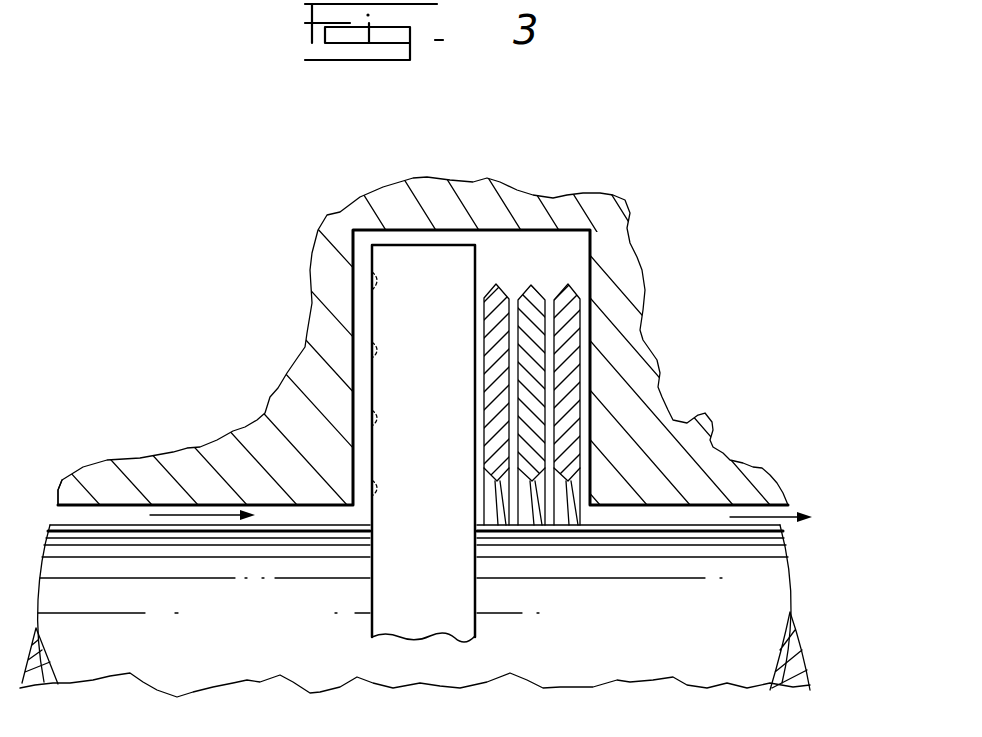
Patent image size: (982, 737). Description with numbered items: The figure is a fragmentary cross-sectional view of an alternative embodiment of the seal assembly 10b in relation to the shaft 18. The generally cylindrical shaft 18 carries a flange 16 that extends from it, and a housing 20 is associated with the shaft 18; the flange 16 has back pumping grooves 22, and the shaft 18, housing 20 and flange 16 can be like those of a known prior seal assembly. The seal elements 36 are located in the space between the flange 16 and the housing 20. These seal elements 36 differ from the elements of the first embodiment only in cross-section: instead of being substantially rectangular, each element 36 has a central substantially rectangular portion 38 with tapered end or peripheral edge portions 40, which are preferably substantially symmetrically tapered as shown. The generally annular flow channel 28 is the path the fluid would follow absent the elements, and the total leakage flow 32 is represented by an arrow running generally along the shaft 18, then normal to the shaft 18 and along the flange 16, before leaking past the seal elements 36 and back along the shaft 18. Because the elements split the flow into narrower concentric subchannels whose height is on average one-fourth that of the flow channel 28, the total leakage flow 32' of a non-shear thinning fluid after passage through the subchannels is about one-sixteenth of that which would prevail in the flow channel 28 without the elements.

The seal assembly 10b is at (530, 268).
The flange 16 is at (410, 222).
The shaft 18 is at (748, 595).
The housing 20 is at (332, 238).
The back pumping grooves 22 is at (372, 302).
The flow channel 28 is at (116, 515).
The total leakage flow 32 is at (202, 445).
The total leakage flow after passage through subchannels 32' is at (784, 478).
The seal elements 36 is at (552, 305).
The central substantially rectangular portion 38 is at (497, 367).
The tapered end or peripheral edge portions 40 is at (500, 288).